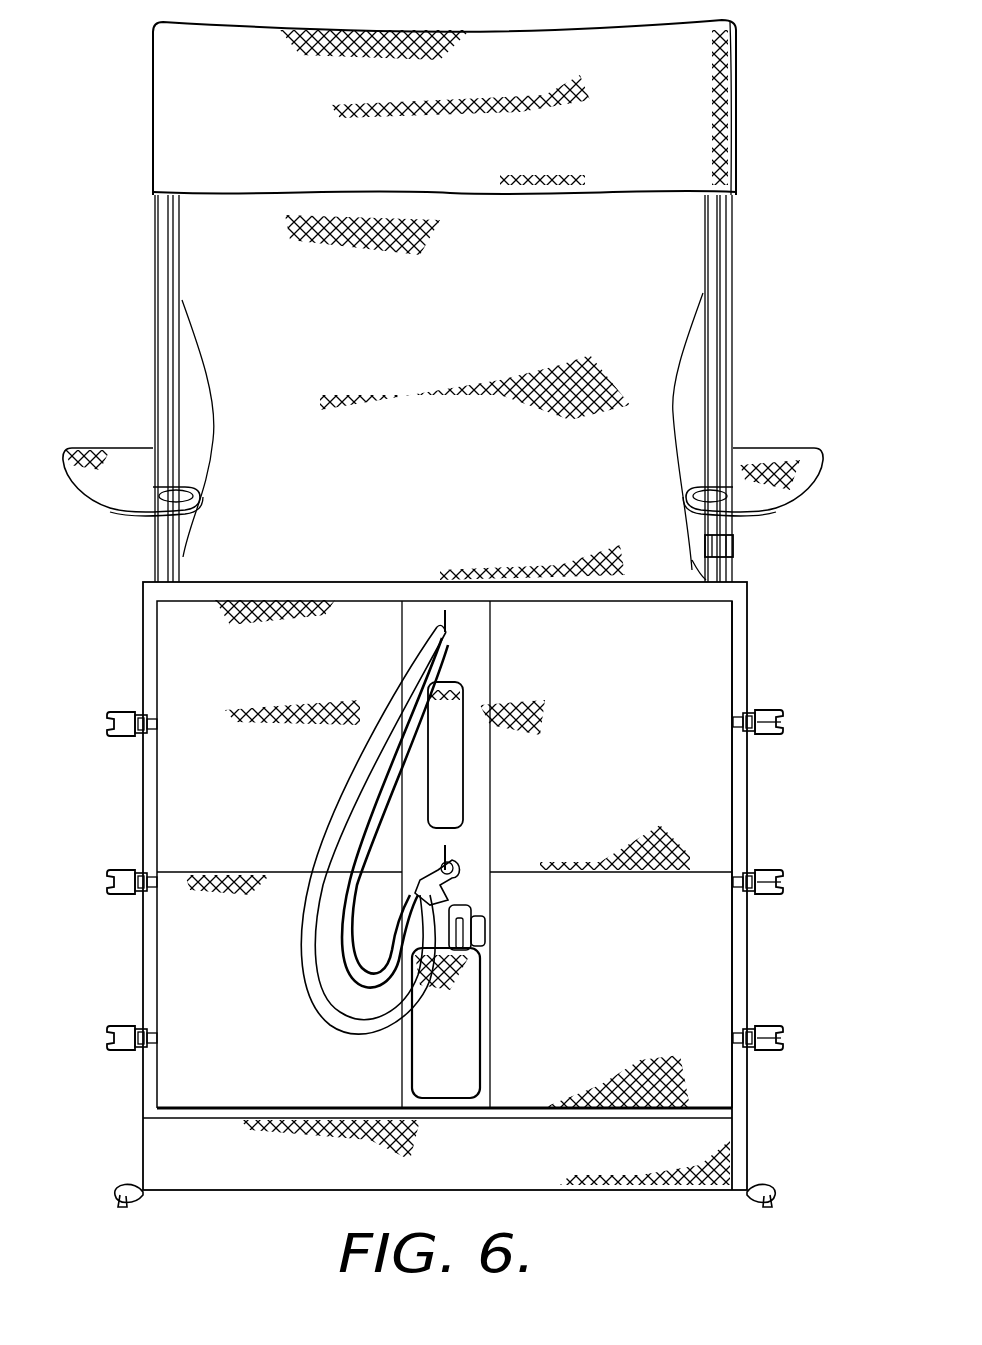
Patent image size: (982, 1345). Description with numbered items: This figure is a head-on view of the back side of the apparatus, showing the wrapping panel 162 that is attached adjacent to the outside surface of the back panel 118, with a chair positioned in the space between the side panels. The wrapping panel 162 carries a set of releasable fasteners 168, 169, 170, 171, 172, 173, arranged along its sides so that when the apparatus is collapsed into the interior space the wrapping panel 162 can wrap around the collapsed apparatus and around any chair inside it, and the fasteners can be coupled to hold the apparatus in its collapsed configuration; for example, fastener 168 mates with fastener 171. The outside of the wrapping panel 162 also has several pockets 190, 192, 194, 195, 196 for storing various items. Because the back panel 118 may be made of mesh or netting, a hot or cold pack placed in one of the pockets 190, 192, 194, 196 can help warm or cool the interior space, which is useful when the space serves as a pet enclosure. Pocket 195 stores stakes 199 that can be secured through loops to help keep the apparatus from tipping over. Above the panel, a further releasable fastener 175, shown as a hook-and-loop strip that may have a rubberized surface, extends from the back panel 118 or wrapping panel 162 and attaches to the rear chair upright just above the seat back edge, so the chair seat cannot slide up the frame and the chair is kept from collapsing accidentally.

The back panel 118 is at (735, 597).
The wrapping panel 162 is at (165, 625).
The releasable fastener 168 is at (113, 713).
The releasable fastener 169 is at (113, 873).
The releasable fastener 170 is at (113, 1029).
The releasable fastener 171 is at (780, 712).
The releasable fastener 172 is at (780, 872).
The releasable fastener 173 is at (780, 1028).
The releasable fastener 175 is at (735, 550).
The pocket 190 is at (220, 867).
The pocket 192 is at (322, 597).
The pocket 194 is at (595, 598).
The pocket 195 is at (470, 1000).
The pocket 196 is at (520, 868).
The stakes 199 is at (468, 893).